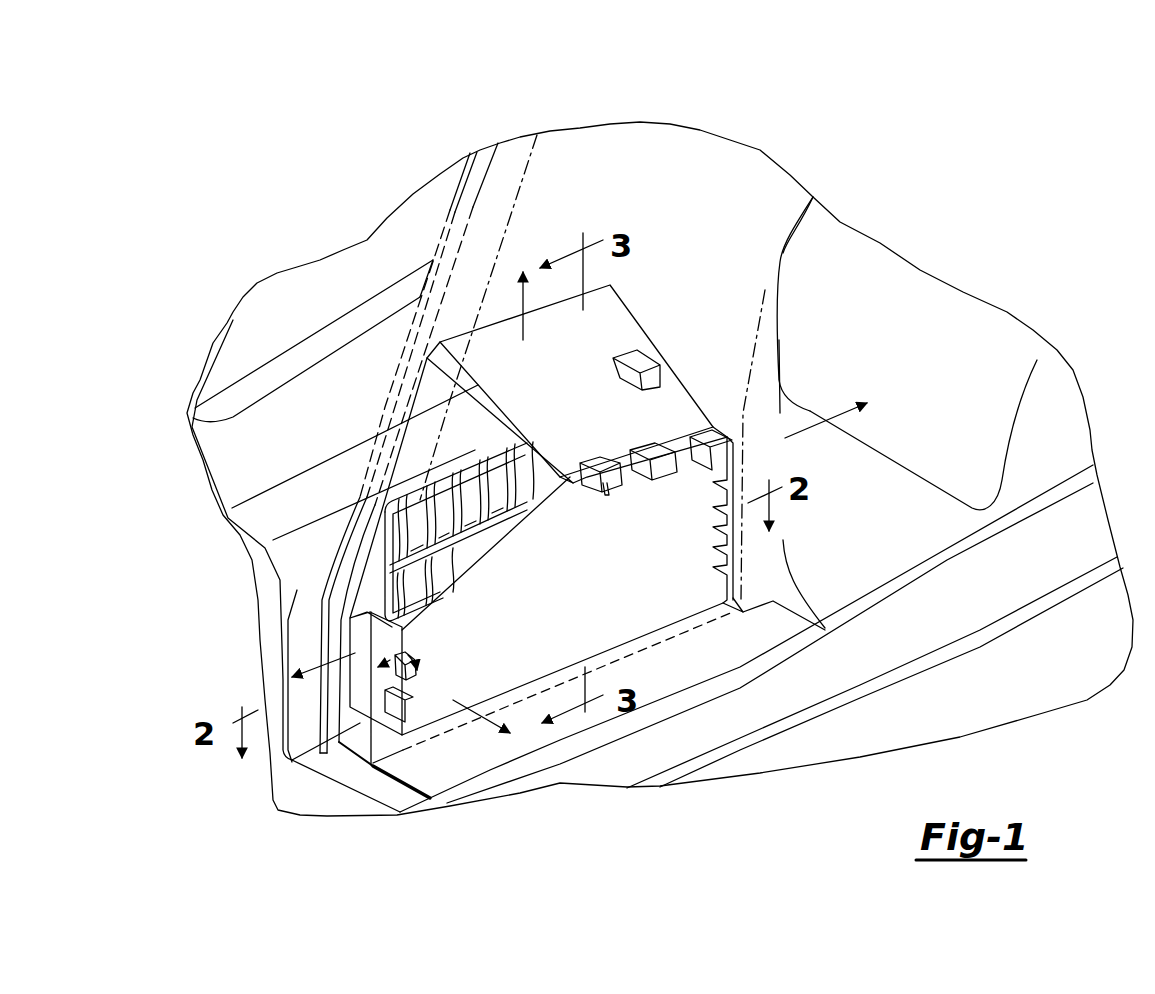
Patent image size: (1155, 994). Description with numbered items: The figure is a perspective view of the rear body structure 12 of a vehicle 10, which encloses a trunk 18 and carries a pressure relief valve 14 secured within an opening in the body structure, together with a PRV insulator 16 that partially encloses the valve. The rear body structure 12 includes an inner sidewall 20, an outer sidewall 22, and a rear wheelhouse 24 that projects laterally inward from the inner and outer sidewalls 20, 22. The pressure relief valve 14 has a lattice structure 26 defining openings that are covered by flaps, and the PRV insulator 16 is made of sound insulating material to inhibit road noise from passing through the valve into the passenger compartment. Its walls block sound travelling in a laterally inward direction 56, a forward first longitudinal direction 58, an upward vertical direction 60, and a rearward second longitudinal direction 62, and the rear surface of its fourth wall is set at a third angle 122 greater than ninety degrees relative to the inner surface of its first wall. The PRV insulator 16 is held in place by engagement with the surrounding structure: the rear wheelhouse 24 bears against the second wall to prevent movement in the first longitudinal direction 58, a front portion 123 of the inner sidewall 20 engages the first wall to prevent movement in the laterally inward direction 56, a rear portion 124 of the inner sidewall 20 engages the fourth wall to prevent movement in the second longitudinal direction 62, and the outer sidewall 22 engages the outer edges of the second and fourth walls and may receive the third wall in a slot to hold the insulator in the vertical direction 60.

The vehicle 10 is at (962, 160).
The rear body structure 12 is at (690, 197).
The pressure relief valve 14 is at (474, 530).
The PRV insulator 16 is at (669, 587).
The trunk 18 is at (745, 252).
The inner sidewall 20 is at (374, 754).
The outer sidewall 22 is at (297, 578).
The rear wheelhouse 24 is at (900, 508).
The lattice structure 26 is at (426, 581).
The laterally inward direction 56 is at (453, 700).
The first longitudinal direction 58 is at (807, 423).
The vertical direction 60 is at (527, 323).
The second longitudinal direction 62 is at (313, 663).
The third angle 122 is at (400, 660).
The front portion of the inner sidewall 123 is at (637, 657).
The rear portion of the inner sidewall 124 is at (360, 723).